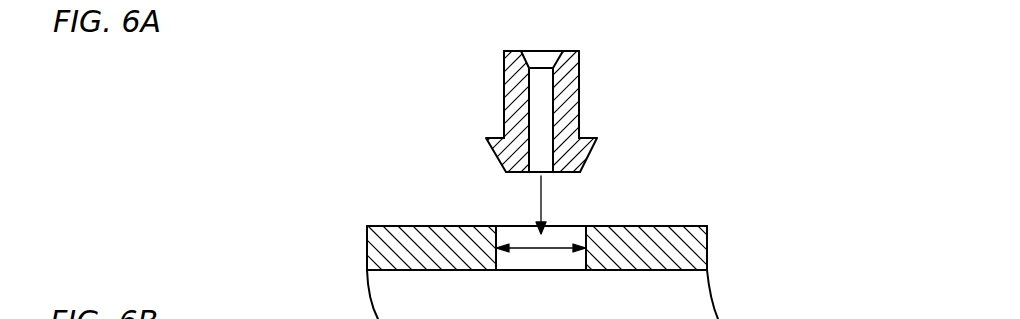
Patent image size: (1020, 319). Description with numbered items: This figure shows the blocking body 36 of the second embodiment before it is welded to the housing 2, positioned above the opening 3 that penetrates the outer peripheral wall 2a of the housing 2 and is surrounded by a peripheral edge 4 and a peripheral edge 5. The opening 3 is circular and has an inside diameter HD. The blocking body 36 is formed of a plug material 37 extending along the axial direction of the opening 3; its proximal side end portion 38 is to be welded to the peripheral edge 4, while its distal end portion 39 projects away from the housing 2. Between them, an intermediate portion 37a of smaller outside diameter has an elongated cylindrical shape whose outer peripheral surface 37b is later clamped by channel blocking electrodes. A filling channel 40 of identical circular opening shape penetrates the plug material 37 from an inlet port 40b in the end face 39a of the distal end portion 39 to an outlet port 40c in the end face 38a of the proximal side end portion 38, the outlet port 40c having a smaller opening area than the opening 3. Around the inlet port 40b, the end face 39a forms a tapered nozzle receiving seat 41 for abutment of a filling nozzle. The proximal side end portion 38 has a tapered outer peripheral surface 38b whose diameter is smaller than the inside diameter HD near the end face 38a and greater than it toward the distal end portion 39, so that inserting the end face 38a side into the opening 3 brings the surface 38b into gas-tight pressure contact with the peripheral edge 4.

The housing 2 is at (400, 240).
The outer peripheral wall 2a is at (400, 240).
The opening 3 is at (496, 240).
The peripheral edge 4 is at (587, 227).
The hole edge 5 is at (606, 263).
The inside diameter HD is at (540, 250).
The blocking body 36 is at (735, 42).
The plug material 37 is at (590, 88).
The intermediate portion 37a is at (575, 113).
The outer peripheral surface 37b is at (503, 113).
The proximal side end portion 38 is at (590, 156).
The end face 38a is at (567, 174).
The outer peripheral surface 38b is at (588, 157).
The distal end portion 39 is at (590, 53).
The end face 39a is at (582, 44).
The filling channel 40 is at (540, 84).
The inlet port 40b is at (543, 56).
The outlet port 40c is at (540, 173).
The nozzle receiving seat 41 is at (503, 51).